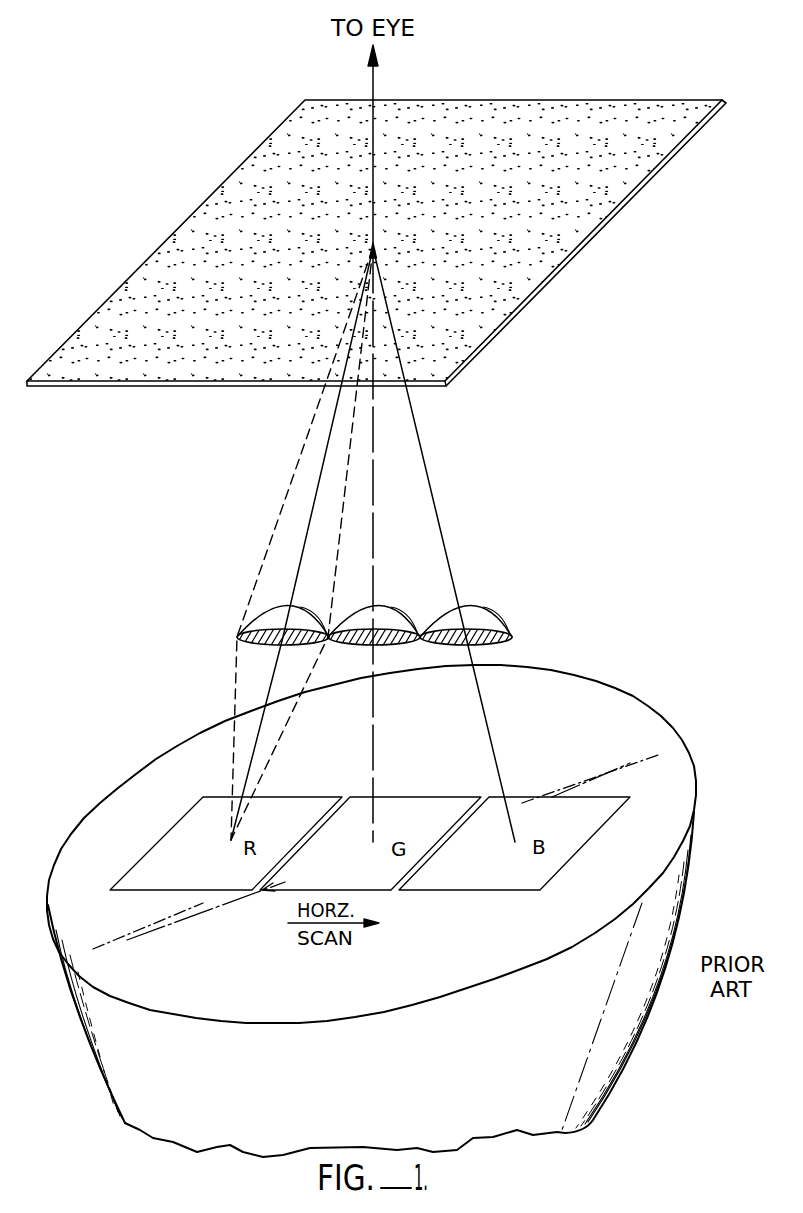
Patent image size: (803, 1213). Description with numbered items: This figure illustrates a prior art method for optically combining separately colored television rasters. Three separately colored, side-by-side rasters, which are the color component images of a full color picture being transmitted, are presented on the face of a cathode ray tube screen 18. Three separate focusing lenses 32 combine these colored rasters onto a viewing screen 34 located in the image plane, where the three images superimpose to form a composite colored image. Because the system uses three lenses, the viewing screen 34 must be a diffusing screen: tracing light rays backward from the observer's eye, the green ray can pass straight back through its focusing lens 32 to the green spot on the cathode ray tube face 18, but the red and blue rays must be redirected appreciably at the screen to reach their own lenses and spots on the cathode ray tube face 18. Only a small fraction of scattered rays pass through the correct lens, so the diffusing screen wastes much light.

The cathode ray tube screen 18 is at (588, 695).
The focusing lenses 32 is at (267, 620).
The viewing screen 34 is at (483, 322).